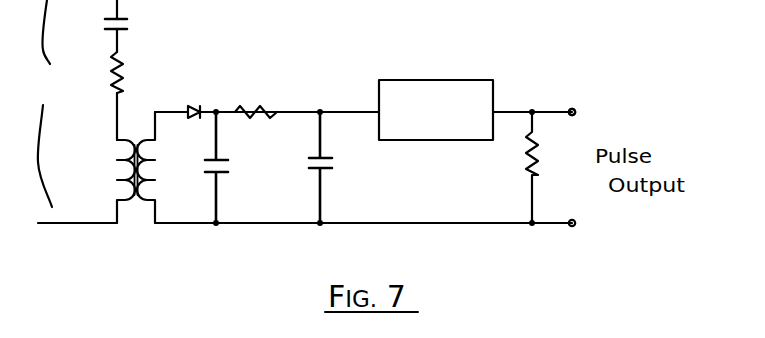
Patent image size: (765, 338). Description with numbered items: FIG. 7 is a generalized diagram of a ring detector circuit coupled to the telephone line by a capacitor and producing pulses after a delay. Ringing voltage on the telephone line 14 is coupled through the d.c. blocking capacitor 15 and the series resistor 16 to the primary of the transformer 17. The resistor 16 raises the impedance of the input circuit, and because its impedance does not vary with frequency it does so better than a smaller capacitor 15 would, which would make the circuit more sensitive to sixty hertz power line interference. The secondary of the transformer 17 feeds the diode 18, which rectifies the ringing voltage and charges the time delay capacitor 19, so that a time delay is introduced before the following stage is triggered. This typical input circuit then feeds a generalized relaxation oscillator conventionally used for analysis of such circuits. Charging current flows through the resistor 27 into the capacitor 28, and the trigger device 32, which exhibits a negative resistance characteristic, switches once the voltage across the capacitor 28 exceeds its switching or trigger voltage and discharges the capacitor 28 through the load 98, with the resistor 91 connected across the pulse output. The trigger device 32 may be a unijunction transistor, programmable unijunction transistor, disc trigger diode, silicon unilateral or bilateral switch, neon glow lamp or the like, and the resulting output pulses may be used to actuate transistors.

The telephone line 14 is at (52, 103).
The d.c. blocking capacitor 15 is at (133, 24).
The resistor 16 is at (125, 77).
The transformer 17 is at (110, 184).
The diode 18 is at (192, 103).
The time delay capacitor 19 is at (205, 162).
The resistor 27 is at (253, 103).
The capacitor 28 is at (307, 180).
The trigger device 32 is at (427, 77).
The resistor 91 is at (542, 148).
The load 98 is at (563, 105).